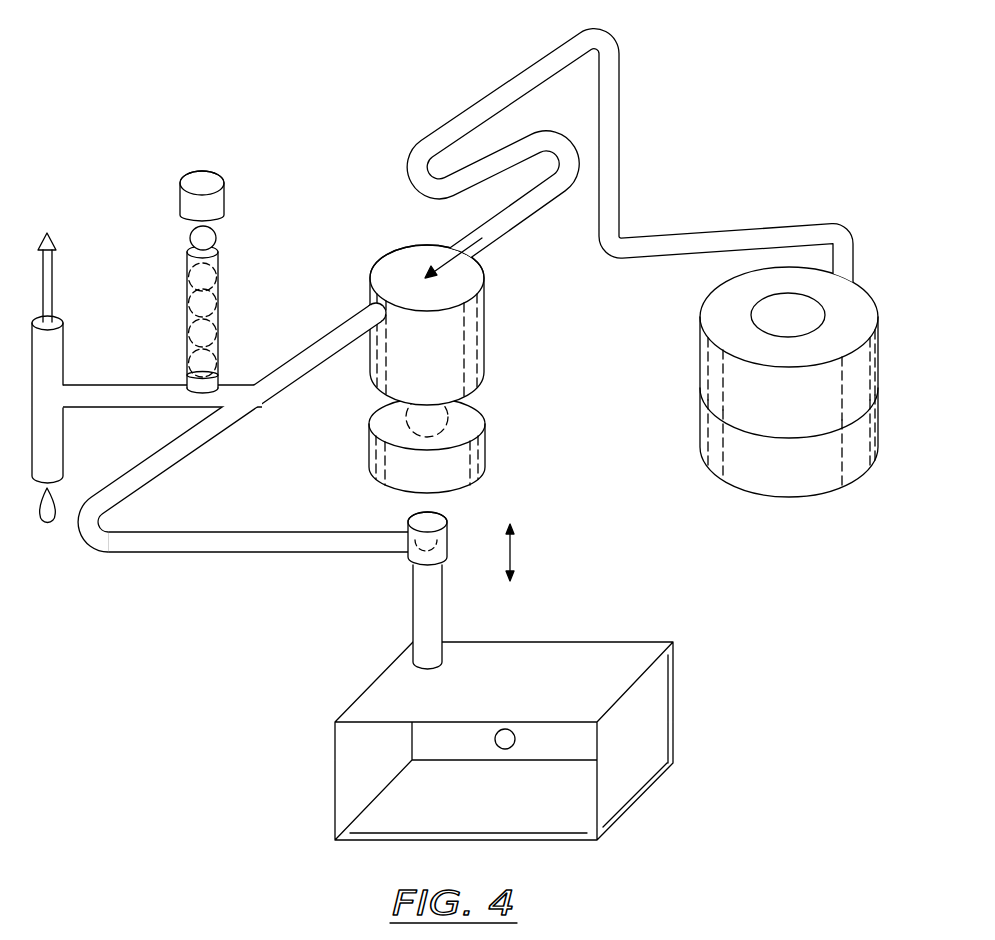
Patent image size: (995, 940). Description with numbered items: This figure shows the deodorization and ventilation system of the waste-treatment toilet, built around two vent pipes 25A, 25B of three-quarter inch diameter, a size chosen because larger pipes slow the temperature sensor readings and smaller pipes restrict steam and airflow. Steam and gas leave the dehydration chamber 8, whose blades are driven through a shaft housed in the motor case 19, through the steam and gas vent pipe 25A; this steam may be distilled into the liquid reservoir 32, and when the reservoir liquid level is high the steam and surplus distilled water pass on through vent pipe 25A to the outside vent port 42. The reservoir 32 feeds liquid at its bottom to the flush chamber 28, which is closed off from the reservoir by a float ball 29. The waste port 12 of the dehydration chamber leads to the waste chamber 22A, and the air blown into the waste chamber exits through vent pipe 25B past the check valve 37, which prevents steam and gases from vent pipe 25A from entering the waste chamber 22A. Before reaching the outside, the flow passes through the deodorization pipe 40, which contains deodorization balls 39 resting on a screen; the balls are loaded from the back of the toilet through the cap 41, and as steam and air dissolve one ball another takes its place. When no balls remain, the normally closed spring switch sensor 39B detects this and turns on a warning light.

The dehydration chamber 8 is at (797, 421).
The motor case 19 is at (774, 487).
The waste port 12 is at (515, 737).
The waste chamber 22A is at (468, 821).
The steam and gas vent pipe 25A is at (292, 387).
The vent pipe 25B is at (413, 583).
The flush chamber 28 is at (415, 490).
The float ball 29 is at (483, 412).
The liquid reservoir 32 is at (415, 387).
The check valve 37 is at (448, 540).
The deodorization balls 39 is at (190, 232).
The spring switch sensor 39B is at (188, 382).
The deodorization pipe 40 is at (187, 295).
The cap 41 is at (180, 202).
The vent port 42 is at (64, 350).